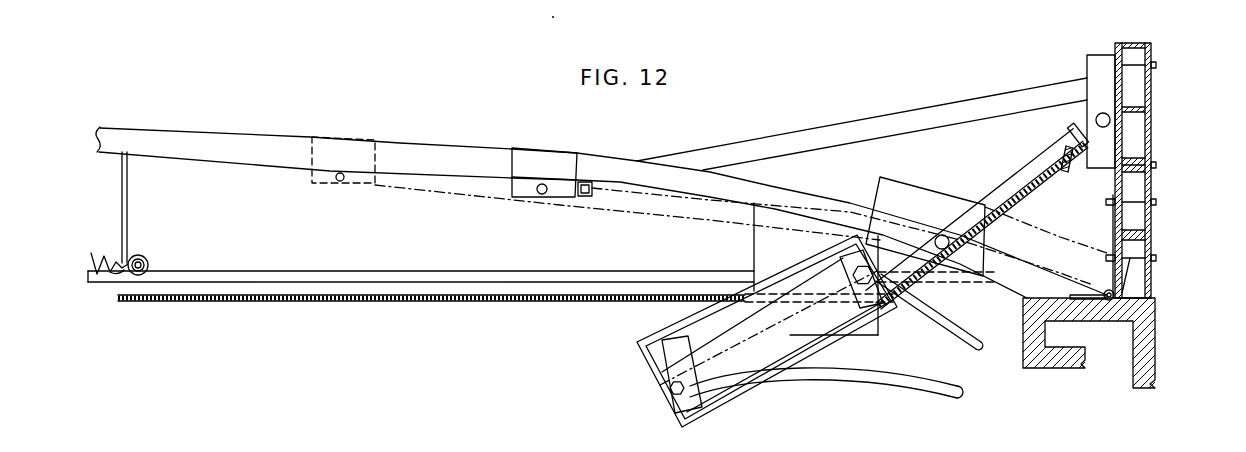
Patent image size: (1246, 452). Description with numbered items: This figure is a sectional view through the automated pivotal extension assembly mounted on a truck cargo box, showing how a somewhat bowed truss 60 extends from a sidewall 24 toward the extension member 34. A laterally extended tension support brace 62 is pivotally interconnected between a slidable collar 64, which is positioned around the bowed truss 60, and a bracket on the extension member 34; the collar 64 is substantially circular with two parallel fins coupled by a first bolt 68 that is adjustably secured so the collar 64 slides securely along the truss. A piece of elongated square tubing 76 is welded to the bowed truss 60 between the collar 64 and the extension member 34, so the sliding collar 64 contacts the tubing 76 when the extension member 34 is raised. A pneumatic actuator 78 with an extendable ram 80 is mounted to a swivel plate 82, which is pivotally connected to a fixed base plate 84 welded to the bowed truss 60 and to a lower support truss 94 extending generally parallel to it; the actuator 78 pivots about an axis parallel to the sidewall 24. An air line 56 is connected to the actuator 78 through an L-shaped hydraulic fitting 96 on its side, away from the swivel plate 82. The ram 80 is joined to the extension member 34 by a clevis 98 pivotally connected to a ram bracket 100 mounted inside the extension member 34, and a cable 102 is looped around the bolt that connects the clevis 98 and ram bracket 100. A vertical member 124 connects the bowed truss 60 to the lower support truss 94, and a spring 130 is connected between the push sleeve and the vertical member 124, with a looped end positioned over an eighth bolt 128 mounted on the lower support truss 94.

The sidewall 24 is at (1153, 345).
The extension member 34 is at (1152, 120).
The air line 56 is at (930, 315).
The bowed truss 60 is at (258, 142).
The tension support brace 62 is at (805, 137).
The collar 64 is at (541, 162).
The first bolt 68 is at (539, 196).
The elongated square tubing 76 is at (585, 198).
The pneumatic actuator 78 is at (793, 325).
The extendable ram 80 is at (1023, 165).
The swivel plate 82 is at (683, 344).
The base plate 84 is at (763, 252).
The lower support truss 94 is at (373, 270).
The L-shaped hydraulic fitting 96 is at (675, 400).
The clevis 98 is at (1074, 126).
The ram bracket 100 is at (1100, 72).
The cable 102 is at (347, 302).
The vertical member 124 is at (129, 212).
The eighth bolt 128 is at (150, 257).
The spring 130 is at (111, 256).